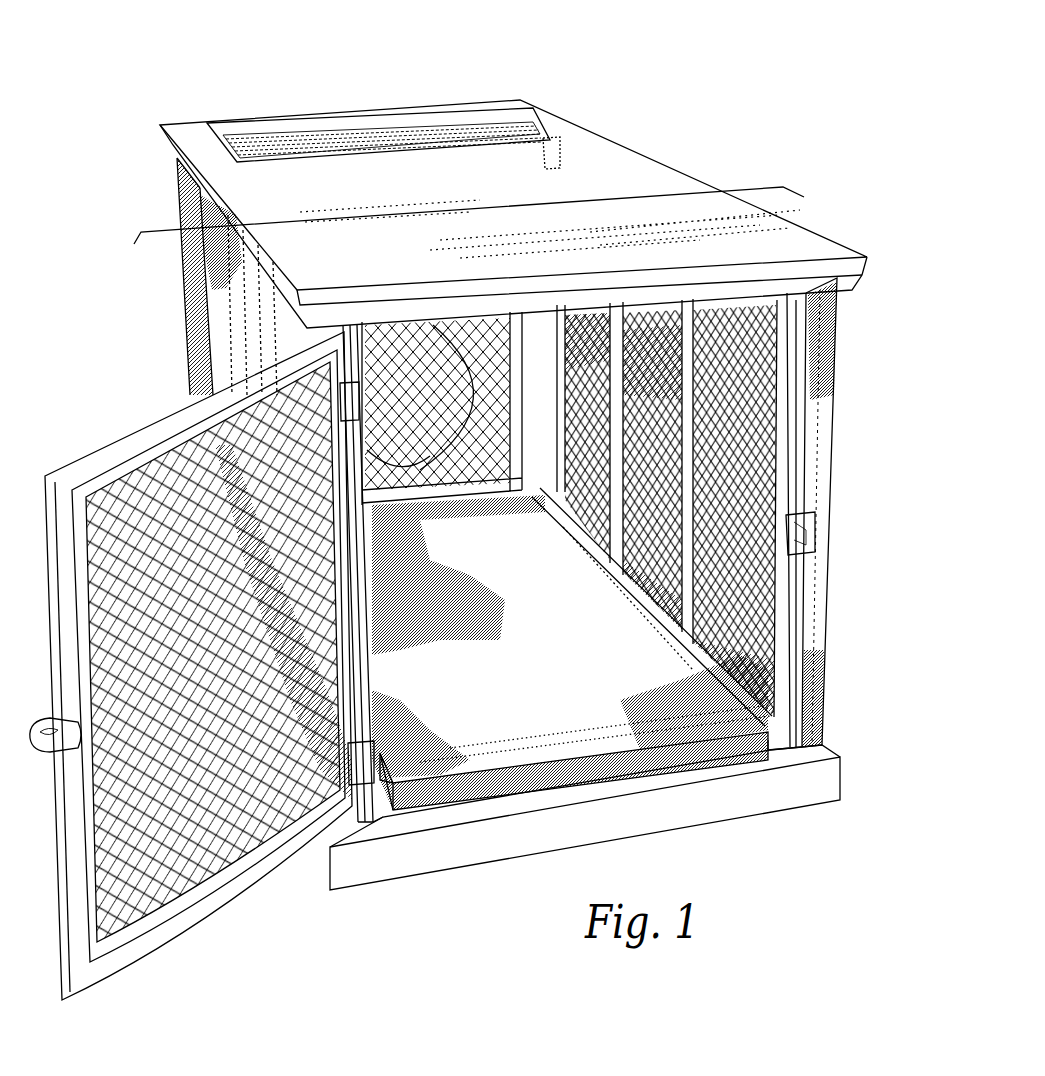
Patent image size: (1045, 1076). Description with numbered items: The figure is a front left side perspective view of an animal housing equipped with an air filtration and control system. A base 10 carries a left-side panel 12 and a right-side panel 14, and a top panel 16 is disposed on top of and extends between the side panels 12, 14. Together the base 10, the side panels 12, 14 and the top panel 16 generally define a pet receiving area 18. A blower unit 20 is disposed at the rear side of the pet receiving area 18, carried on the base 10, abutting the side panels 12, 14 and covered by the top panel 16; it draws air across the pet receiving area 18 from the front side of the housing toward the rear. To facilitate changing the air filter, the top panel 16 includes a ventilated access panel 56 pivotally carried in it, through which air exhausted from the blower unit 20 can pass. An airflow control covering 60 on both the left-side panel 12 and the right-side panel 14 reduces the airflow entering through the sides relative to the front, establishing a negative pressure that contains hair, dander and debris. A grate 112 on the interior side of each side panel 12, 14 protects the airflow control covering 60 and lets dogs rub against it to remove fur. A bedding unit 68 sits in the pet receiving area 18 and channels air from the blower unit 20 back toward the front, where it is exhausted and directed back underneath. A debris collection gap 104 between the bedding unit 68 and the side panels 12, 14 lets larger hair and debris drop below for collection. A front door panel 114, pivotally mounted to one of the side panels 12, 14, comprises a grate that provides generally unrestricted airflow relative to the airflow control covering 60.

The base 10 is at (790, 800).
The left-side panel 12 is at (365, 607).
The right-side panel 14 is at (803, 472).
The top panel 16 is at (590, 165).
The pet receiving area 18 is at (563, 685).
The blower unit 20 is at (190, 208).
The ventilated access panel 56 is at (396, 128).
The airflow control covering 60 is at (227, 328).
The bedding unit 68 is at (677, 753).
The debris collection gap 104 is at (387, 813).
The grate 112 is at (757, 353).
The front door panel 114 is at (183, 883).